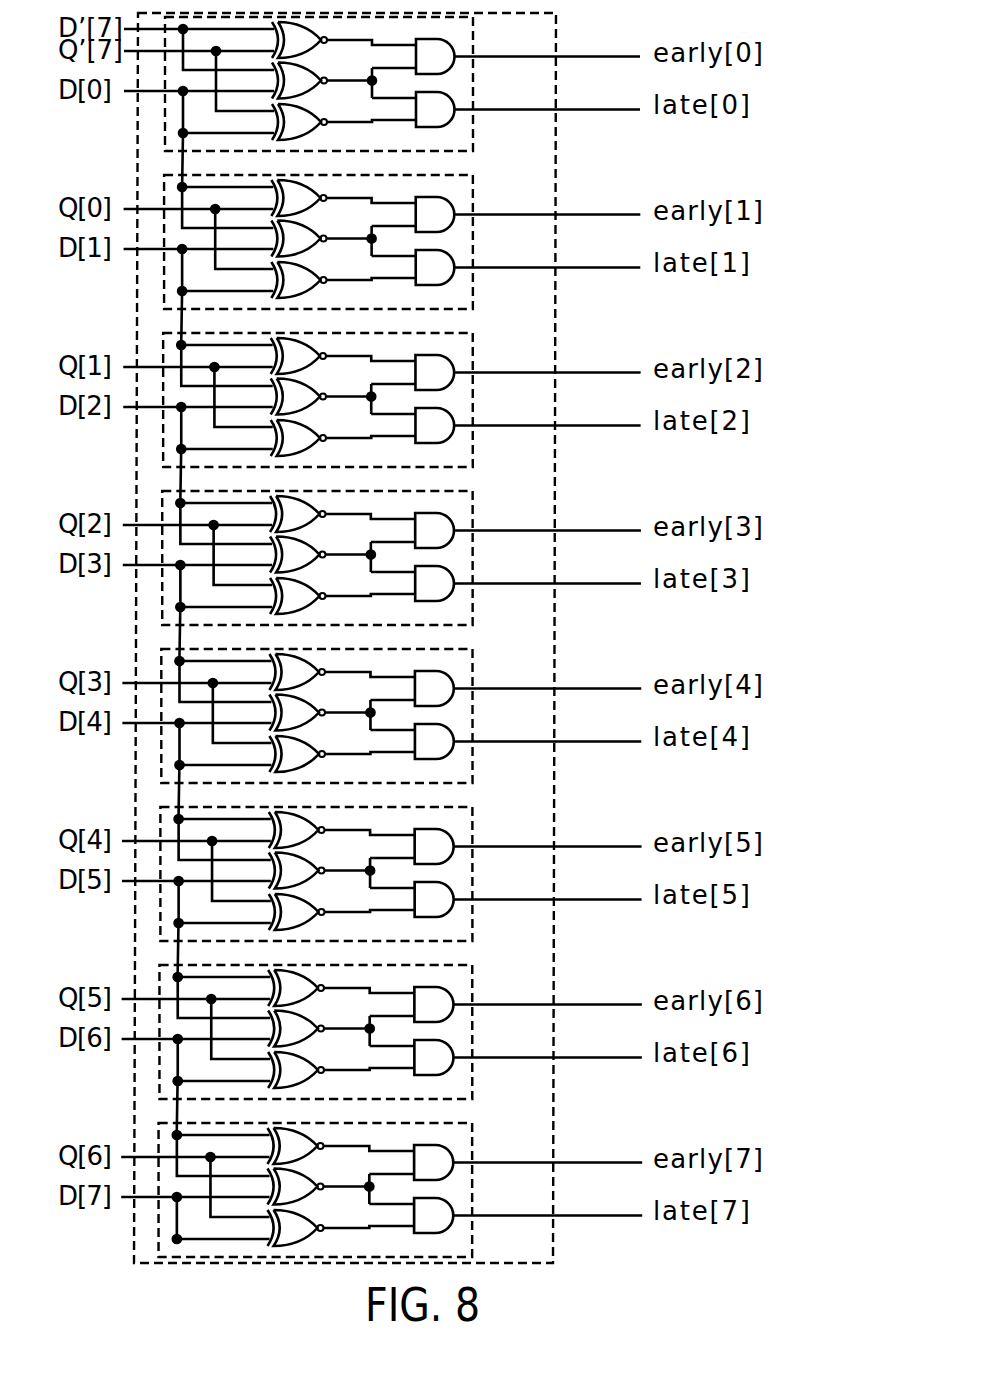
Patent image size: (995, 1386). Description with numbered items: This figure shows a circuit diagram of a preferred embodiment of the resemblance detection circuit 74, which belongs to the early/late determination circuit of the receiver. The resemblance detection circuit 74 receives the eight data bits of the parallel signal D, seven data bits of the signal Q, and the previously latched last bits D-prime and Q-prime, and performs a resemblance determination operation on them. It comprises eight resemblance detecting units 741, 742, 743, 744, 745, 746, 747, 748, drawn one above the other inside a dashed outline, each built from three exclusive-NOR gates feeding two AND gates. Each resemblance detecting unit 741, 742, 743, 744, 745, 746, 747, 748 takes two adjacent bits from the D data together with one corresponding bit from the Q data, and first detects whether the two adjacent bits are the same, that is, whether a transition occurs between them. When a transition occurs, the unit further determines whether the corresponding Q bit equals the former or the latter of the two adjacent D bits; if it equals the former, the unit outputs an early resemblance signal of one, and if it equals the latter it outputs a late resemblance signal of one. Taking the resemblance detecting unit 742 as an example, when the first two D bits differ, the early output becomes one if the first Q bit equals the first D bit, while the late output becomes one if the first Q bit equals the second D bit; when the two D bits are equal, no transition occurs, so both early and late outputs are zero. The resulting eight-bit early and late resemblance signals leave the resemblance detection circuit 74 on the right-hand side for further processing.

The resemblance detection circuit 74 is at (388, 634).
The resemblance detecting unit 741 is at (473, 139).
The resemblance detecting unit 742 is at (473, 197).
The resemblance detecting unit 743 is at (473, 455).
The resemblance detecting unit 744 is at (473, 513).
The resemblance detecting unit 745 is at (473, 771).
The resemblance detecting unit 746 is at (473, 829).
The resemblance detecting unit 747 is at (473, 1087).
The resemblance detecting unit 748 is at (473, 1145).